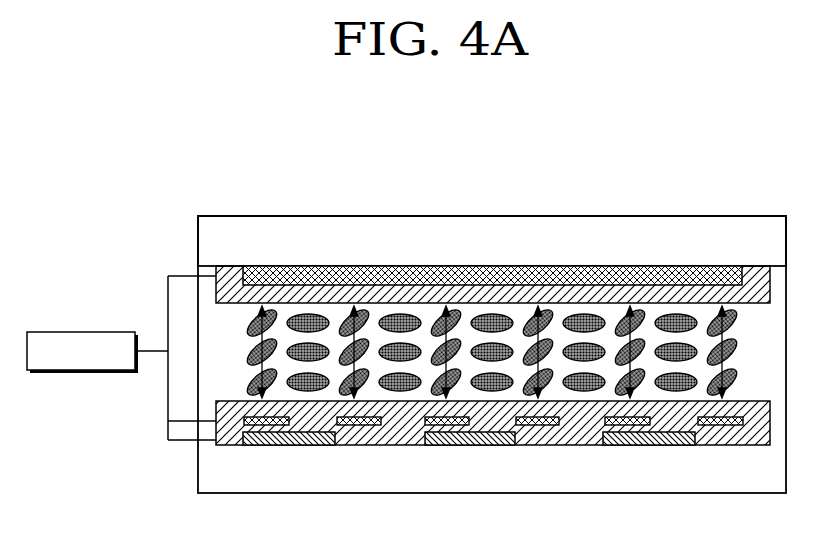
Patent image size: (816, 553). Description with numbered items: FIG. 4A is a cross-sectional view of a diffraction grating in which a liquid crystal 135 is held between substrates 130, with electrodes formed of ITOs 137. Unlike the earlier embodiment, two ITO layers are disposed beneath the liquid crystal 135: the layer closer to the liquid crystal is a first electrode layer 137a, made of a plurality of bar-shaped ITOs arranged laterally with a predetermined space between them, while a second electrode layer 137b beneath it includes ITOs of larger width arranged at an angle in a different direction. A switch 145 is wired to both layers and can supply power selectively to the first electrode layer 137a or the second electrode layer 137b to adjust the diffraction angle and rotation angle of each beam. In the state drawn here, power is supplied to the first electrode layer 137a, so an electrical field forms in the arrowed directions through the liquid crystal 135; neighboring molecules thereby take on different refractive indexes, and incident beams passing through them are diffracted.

The substrate 130 is at (460, 223).
The ITO 137 is at (562, 266).
The liquid crystal 135 is at (672, 314).
The first electrode layer 137a is at (538, 444).
The second electrode layer 137b is at (625, 444).
The switch 145 is at (80, 331).